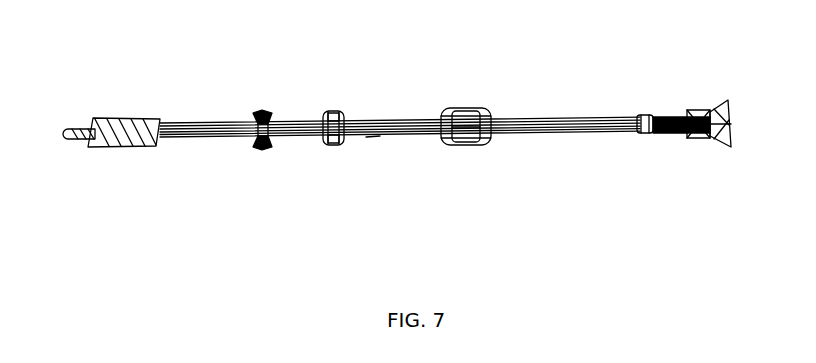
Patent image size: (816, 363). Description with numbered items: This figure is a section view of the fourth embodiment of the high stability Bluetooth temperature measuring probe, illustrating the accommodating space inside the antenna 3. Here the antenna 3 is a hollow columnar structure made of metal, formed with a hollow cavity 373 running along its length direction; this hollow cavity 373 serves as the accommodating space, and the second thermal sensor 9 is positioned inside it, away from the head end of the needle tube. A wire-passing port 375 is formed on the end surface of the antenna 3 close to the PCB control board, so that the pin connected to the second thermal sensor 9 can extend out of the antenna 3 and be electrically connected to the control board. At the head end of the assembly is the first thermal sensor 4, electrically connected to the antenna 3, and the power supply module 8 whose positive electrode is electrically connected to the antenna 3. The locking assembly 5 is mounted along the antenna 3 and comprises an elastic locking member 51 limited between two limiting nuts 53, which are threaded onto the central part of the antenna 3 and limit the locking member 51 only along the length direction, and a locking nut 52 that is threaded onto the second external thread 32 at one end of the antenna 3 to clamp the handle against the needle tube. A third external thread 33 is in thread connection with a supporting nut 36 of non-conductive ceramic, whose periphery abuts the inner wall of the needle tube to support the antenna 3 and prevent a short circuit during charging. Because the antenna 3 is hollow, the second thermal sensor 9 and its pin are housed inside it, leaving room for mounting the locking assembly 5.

The antenna 3 is at (403, 139).
The first thermal sensor 4 is at (72, 124).
The locking assembly 5 is at (532, 75).
The power supply module 8 is at (133, 126).
The second thermal sensor 9 is at (632, 118).
The second external thread 32 is at (672, 131).
The third external thread 33 is at (325, 110).
The supporting nut 36 is at (338, 112).
The locking member 51 is at (468, 108).
The locking nut 52 is at (727, 102).
The limiting nut 53 is at (488, 113).
The hollow cavity 373 is at (373, 138).
The wire-passing port 375 is at (311, 123).